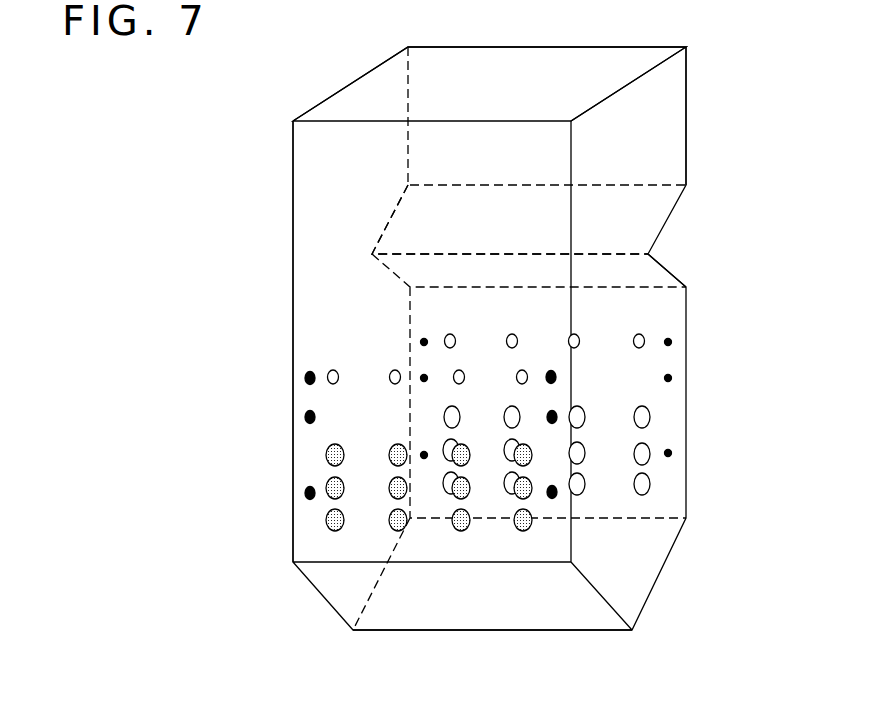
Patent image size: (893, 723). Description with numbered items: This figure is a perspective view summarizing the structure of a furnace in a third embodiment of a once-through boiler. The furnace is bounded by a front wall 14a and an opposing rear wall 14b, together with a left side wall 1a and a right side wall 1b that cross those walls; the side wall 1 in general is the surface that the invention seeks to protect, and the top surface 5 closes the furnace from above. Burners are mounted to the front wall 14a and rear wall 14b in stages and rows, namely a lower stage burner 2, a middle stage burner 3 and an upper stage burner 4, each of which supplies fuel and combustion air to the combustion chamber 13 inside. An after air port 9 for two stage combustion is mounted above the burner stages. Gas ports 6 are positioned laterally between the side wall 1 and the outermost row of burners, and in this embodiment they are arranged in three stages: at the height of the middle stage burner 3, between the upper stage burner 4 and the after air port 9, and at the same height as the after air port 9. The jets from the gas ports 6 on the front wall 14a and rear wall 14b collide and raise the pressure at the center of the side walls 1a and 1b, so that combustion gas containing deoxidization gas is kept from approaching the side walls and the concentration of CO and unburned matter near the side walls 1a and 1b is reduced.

The side wall 1 is at (315, 228).
The left side wall 1a is at (315, 266).
The right side wall 1b is at (667, 160).
The top surface 5 is at (657, 92).
The combustion chamber 13 is at (510, 219).
The front wall 14a is at (507, 547).
The rear wall 14b is at (637, 296).
The after air port 9 is at (517, 382).
The gas port 6 is at (310, 378).
The upper stage burner 4 is at (335, 457).
The middle stage burner 3 is at (335, 487).
The lower stage burner 2 is at (335, 522).